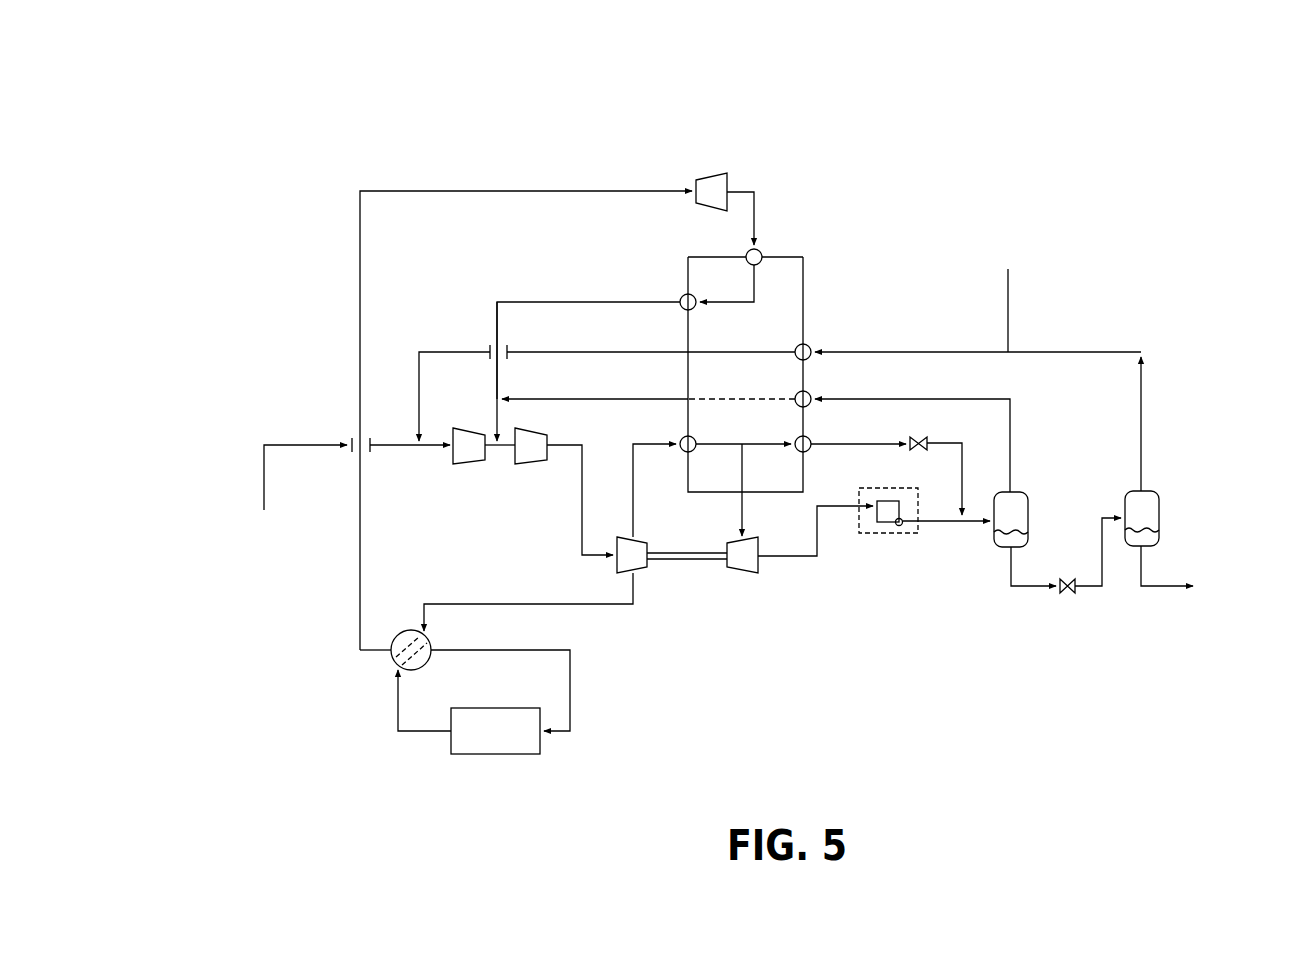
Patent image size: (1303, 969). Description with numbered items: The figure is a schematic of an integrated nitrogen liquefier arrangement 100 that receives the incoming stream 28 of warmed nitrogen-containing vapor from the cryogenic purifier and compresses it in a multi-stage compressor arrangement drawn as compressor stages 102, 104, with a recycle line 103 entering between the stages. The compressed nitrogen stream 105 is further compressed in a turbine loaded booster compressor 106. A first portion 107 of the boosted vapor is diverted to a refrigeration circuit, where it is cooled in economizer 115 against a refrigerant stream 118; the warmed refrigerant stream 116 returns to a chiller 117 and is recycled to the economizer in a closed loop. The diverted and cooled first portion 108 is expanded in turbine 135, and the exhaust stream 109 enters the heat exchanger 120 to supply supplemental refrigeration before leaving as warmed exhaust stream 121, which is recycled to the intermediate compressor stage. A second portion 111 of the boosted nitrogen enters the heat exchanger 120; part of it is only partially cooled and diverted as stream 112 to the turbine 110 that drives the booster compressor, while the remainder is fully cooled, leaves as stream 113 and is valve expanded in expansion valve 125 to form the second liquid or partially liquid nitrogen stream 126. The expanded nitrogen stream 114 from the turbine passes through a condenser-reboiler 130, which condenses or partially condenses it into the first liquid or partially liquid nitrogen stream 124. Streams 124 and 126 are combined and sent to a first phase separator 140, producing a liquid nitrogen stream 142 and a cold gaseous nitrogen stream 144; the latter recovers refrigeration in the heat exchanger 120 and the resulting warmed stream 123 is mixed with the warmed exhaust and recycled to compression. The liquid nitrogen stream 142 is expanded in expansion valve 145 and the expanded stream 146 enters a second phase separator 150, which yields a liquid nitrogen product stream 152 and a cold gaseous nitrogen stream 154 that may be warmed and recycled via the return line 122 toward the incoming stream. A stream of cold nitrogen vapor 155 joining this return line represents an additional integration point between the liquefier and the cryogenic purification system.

The integrated nitrogen liquefier arrangement 100 is at (267, 127).
The incoming stream 28 is at (262, 473).
The compressor stage 102 is at (472, 465).
The recycle stream 103 is at (500, 418).
The compressor stage 104 is at (532, 465).
The compressed nitrogen stream 105 is at (580, 527).
The turbine loaded booster compressor 106 is at (640, 570).
The first portion of further compressed nitrogen vapor stream 107 is at (488, 602).
The diverted and cooled first portion 108 is at (497, 190).
The exhaust stream 109 is at (755, 212).
The turbine 110 is at (742, 572).
The second portion of further compressed nitrogen stream 111 is at (636, 520).
The partially cooled stream 112 is at (744, 520).
The stream to valve 113 is at (770, 446).
The expanded nitrogen stream 114 is at (790, 560).
The economizer 115 is at (393, 658).
The warmed refrigerant stream 116 is at (530, 650).
The chiller 117 is at (507, 756).
The refrigerant stream 118 is at (428, 733).
The heat exchanger 120 is at (800, 263).
The warmed exhaust stream 121 is at (555, 302).
The vapor return stream 122 is at (568, 352).
The warmed stream 123 is at (595, 399).
The first liquid or partially liquid nitrogen stream 124 is at (942, 522).
The expansion valve 125 is at (925, 440).
The second liquid or partially liquid nitrogen stream 126 is at (965, 483).
The condenser-reboiler 130 is at (888, 514).
The turbine 135 is at (720, 176).
The first phase separator 140 is at (1045, 482).
The liquid nitrogen stream 142 is at (1027, 592).
The cold gaseous nitrogen stream 144 is at (1013, 412).
The expansion valve 145 is at (1072, 592).
The expanded stream to second separator 146 is at (1100, 548).
The second phase separator 150 is at (1160, 493).
The liquid nitrogen product stream 152 is at (1163, 577).
The cold gaseous nitrogen stream 154 is at (1145, 405).
The stream of cold nitrogen vapor 155 is at (1010, 303).